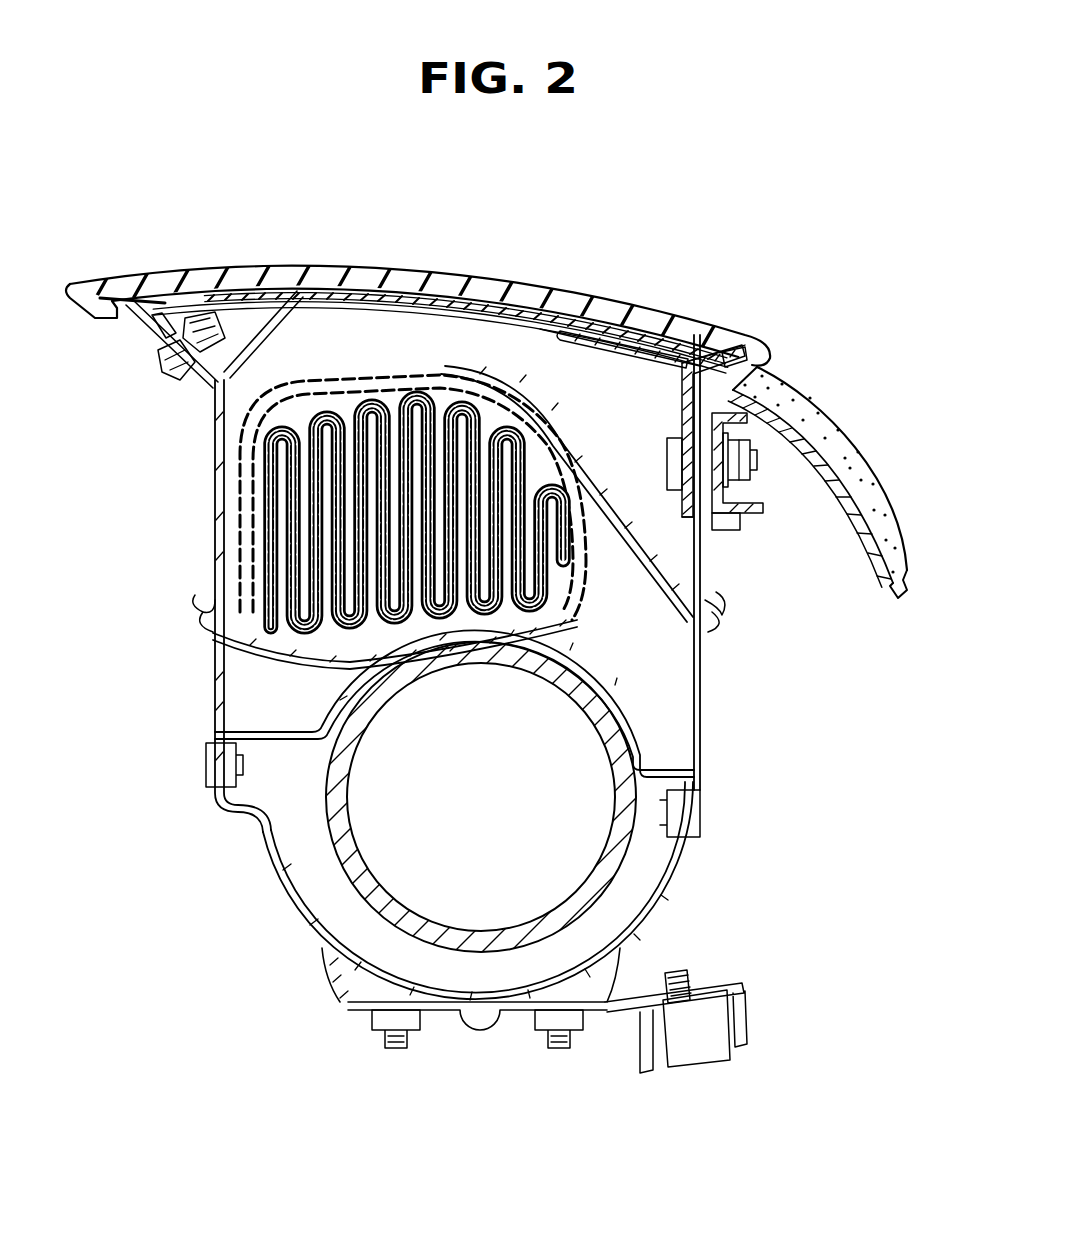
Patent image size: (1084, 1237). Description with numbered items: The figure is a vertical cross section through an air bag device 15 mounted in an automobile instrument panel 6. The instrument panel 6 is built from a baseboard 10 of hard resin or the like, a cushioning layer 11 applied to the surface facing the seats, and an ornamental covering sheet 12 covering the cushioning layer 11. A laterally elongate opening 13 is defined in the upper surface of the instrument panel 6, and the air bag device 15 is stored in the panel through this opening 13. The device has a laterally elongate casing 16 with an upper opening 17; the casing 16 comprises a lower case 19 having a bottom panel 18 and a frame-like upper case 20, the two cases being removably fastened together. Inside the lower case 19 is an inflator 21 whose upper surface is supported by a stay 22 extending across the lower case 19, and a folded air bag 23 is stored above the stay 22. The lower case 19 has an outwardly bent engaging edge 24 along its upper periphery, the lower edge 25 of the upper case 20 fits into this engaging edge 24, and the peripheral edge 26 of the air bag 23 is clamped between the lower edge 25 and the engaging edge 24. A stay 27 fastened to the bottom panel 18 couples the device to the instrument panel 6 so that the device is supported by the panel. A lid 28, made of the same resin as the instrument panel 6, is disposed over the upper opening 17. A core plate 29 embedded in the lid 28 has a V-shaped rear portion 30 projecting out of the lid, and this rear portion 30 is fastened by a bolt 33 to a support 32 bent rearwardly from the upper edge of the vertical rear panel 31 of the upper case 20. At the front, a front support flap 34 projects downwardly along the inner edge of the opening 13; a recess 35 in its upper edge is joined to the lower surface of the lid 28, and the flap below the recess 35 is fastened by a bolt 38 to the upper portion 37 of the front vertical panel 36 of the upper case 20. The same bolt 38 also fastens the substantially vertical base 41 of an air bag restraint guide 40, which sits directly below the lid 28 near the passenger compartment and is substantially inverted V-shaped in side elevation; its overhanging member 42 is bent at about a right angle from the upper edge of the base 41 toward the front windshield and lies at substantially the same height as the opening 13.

The instrument panel 6 is at (825, 397).
The baseboard 10 is at (893, 578).
The cushioning layer 11 is at (873, 500).
The ornamental covering sheet 12 is at (847, 447).
The opening 13 is at (673, 396).
The air bag device 15 is at (534, 340).
The casing 16 is at (249, 831).
The upper opening 17 is at (466, 330).
The bottom panel 18 is at (338, 966).
The lower case 19 is at (287, 906).
The upper case 20 is at (222, 448).
The inflator 21 is at (620, 878).
The stay 22 is at (322, 736).
The air bag 23 is at (270, 490).
The engaging edge 24 is at (203, 625).
The lower edge 25 is at (250, 645).
The peripheral edge 26 is at (194, 598).
The stay 27 is at (710, 1008).
The lid 28 is at (383, 264).
The core plate 29 is at (433, 292).
The V-shaped rear portion 30 is at (262, 342).
The vertical rear panel 31 is at (216, 395).
The support 32 is at (152, 335).
The bolt 33 is at (170, 370).
The front support flap 34 is at (725, 522).
The recess 35 is at (732, 345).
The front vertical panel 36 is at (696, 528).
The upper portion 37 is at (667, 452).
The bolt 38 is at (757, 462).
The air bag restraint guide 40 is at (674, 365).
The base 41 is at (677, 505).
The overhanging member 42 is at (590, 344).